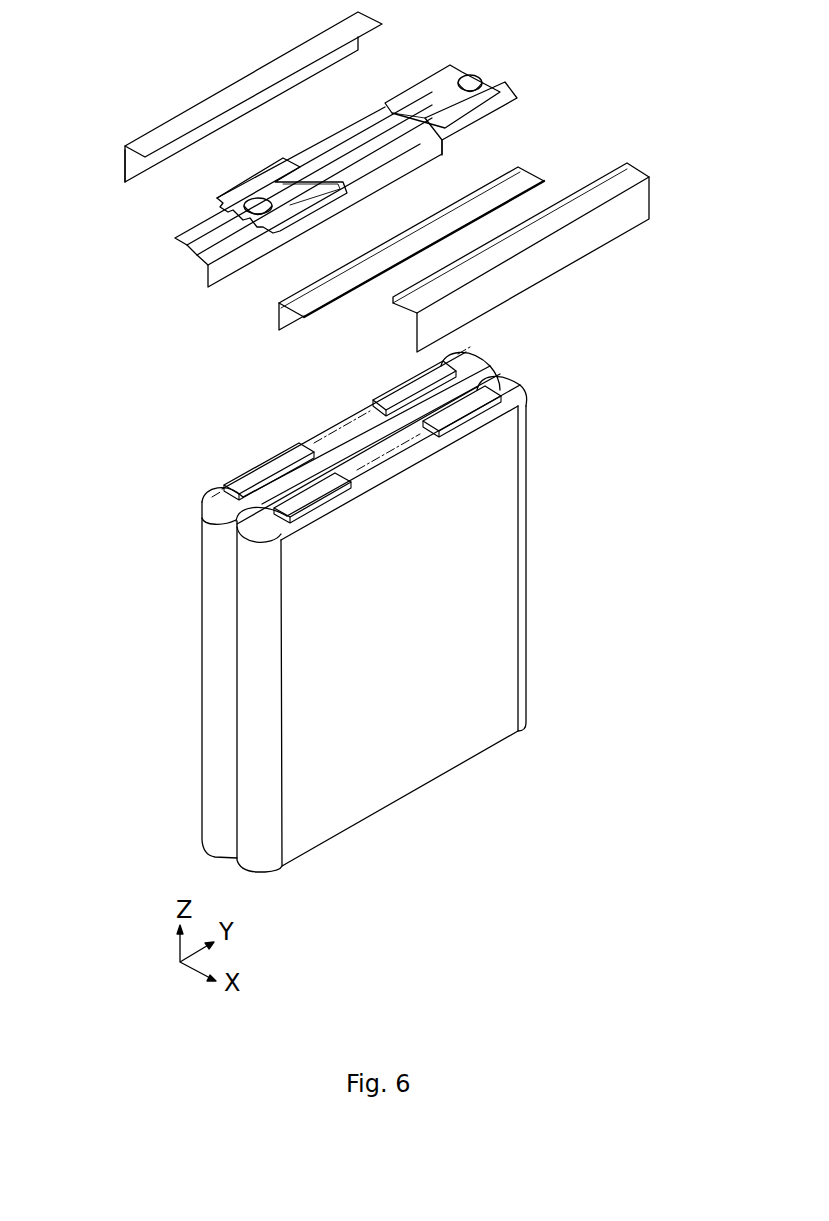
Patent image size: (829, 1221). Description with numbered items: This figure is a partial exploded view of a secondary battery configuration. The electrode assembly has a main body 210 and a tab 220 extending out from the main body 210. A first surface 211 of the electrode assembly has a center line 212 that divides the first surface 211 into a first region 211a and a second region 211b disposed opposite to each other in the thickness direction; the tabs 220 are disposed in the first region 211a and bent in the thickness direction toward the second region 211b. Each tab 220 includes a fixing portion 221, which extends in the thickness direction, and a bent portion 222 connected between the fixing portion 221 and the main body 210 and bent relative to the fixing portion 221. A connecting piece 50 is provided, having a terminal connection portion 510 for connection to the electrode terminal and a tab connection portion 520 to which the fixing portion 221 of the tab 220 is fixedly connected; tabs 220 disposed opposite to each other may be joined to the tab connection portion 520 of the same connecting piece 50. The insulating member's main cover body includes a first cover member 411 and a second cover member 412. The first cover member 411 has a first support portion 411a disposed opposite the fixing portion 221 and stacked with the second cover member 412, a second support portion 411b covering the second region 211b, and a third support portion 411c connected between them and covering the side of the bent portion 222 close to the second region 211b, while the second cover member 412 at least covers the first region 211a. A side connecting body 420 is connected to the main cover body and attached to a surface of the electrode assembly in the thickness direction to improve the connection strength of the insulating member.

The connecting piece 50 is at (519, 92).
The terminal connection portion 510 is at (470, 80).
The tab connection portion 520 is at (470, 128).
The first cover member 411 is at (241, 193).
The first support portion 411a is at (187, 236).
The second support portion 411b is at (205, 265).
The third support portion 411c is at (196, 250).
The second cover member 412 is at (152, 134).
The side connecting body 420 is at (122, 168).
The main body 210 is at (325, 584).
The first surface 211 is at (276, 446).
The first region 211a is at (201, 504).
The second region 211b is at (210, 520).
The center line 212 is at (522, 378).
The tab 220 is at (376, 410).
The fixing portion 221 is at (257, 468).
The bent portion 222 is at (273, 396).